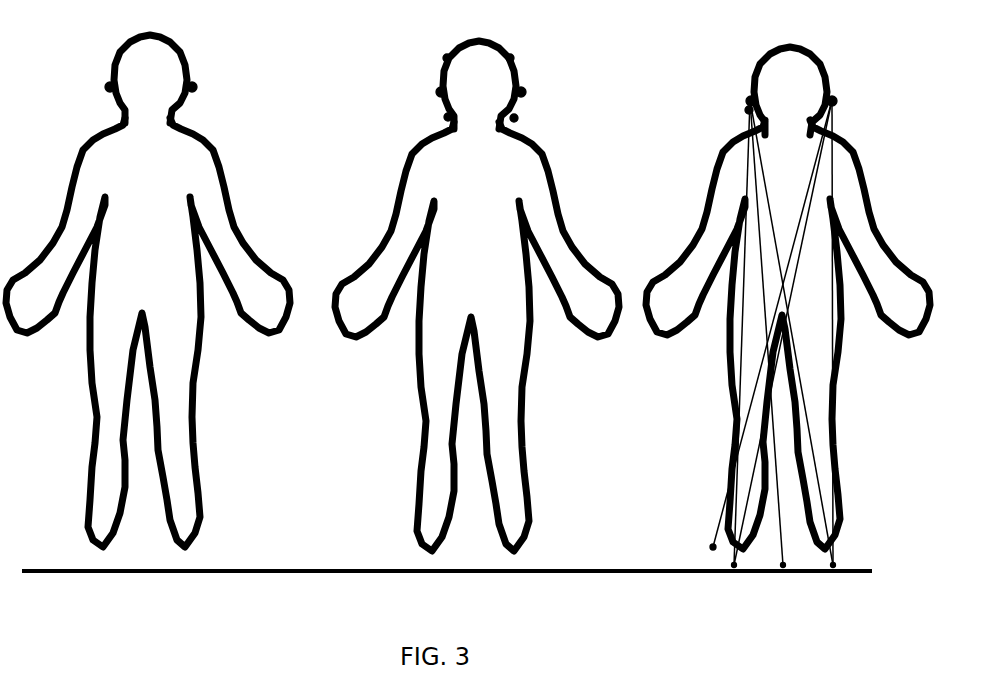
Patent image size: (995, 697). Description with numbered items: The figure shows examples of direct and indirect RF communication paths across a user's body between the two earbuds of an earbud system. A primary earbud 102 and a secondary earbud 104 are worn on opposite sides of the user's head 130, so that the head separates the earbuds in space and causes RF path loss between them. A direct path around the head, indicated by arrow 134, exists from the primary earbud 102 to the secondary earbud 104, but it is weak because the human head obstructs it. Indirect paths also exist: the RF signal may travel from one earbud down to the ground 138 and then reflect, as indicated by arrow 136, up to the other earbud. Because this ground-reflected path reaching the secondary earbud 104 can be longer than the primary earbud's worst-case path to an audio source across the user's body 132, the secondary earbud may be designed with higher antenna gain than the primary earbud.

The primary earbud 102 is at (195, 85).
The secondary earbud 104 is at (107, 85).
The head 130 is at (470, 85).
The body of user 132 is at (468, 334).
The arrow 134 is at (447, 57).
The arrow 136 is at (746, 109).
The ground 138 is at (643, 569).